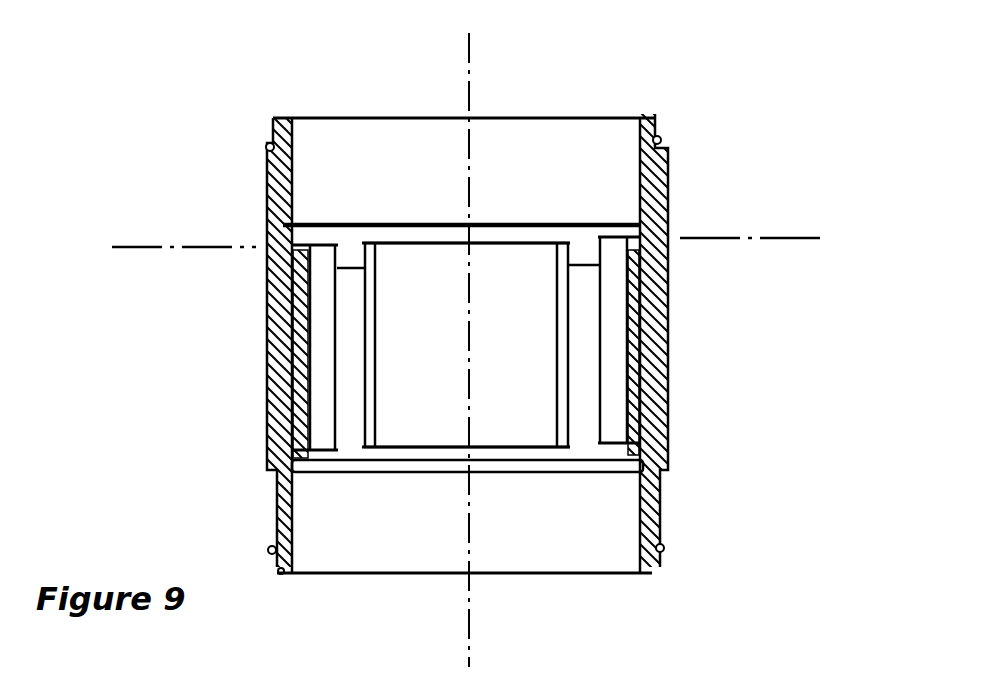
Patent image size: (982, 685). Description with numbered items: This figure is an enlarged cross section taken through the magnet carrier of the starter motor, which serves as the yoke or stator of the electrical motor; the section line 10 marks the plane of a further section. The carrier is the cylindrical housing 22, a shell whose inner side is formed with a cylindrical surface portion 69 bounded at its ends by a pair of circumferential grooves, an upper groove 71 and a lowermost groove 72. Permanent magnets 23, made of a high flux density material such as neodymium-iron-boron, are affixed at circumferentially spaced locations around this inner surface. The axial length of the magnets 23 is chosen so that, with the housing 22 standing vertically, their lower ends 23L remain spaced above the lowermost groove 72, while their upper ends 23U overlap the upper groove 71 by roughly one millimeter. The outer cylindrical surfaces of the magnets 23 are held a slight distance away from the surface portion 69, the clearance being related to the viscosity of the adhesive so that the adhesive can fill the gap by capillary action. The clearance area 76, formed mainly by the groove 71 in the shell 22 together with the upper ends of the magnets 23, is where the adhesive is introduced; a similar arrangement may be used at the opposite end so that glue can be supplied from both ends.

The section line 10 is at (149, 246).
The cylindrical housing 22 is at (541, 305).
The permanent magnets 23 is at (466, 327).
The upper ends of the magnets 23U is at (400, 236).
The lower ends of the magnets 23L is at (409, 462).
The cylindrical surface portion 69 is at (516, 305).
The upper circumferential groove 71 is at (578, 235).
The lower circumferential groove 72 is at (655, 487).
The clearance area 76 is at (613, 113).